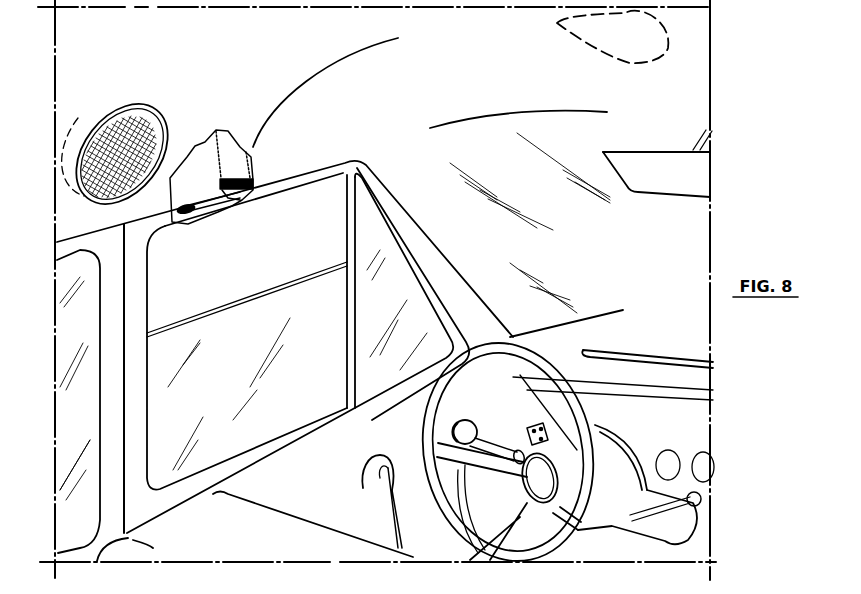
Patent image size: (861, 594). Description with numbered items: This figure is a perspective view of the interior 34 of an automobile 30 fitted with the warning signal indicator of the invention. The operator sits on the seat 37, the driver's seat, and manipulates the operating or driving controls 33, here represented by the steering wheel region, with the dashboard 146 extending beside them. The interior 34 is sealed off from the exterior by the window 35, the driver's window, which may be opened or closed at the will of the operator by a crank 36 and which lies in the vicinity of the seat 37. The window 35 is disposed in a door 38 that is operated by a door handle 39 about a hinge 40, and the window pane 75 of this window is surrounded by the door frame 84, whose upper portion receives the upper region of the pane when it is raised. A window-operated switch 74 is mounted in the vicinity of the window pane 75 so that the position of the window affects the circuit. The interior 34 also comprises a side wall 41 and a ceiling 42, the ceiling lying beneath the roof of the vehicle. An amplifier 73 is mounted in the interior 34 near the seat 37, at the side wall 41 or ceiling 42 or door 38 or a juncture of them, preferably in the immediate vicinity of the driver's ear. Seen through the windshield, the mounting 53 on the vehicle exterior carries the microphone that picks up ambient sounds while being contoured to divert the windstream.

The automobile 30 is at (70, 108).
The operating or driving controls 33 is at (607, 427).
The interior 34 is at (698, 92).
The window 35 is at (283, 295).
The crank 36 is at (489, 438).
The seat 37 is at (257, 525).
The door 38 is at (370, 523).
The door handle 39 is at (402, 531).
The hinge 40 is at (538, 423).
The side wall 41 is at (68, 227).
The ceiling 42 is at (705, 42).
The mounting 53 is at (618, 49).
The amplifier 73 is at (129, 124).
The window-operated switch 74 is at (203, 212).
The window pane 75 is at (183, 333).
The door frame 84 is at (311, 190).
The dashboard 146 is at (698, 431).